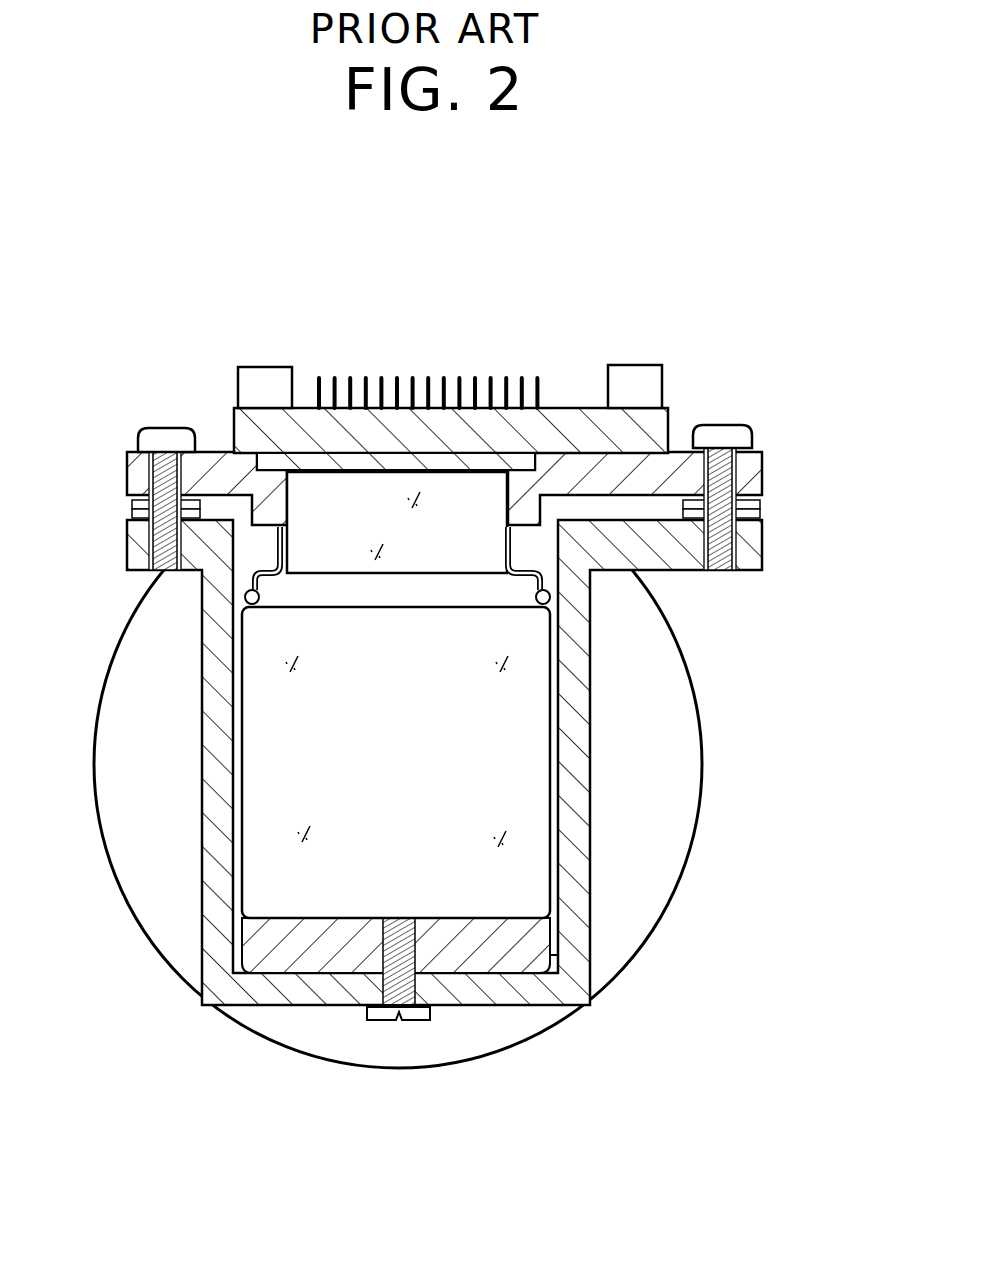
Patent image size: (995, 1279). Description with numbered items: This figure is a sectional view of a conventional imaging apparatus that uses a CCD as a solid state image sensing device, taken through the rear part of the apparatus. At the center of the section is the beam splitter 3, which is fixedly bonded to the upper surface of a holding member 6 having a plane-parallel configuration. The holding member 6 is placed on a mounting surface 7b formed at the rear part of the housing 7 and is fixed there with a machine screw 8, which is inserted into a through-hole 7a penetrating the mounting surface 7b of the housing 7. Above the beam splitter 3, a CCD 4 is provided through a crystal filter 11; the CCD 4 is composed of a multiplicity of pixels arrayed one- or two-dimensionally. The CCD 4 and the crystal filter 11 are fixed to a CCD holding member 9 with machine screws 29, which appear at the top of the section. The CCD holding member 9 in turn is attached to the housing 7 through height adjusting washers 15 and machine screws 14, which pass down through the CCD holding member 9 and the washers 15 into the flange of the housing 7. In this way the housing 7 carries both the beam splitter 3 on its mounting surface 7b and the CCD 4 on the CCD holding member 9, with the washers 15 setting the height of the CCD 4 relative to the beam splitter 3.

The beam splitter 3 is at (530, 712).
The CCD 4 is at (572, 408).
The holding member 6 is at (293, 962).
The housing 7 is at (680, 780).
The through-hole 7a is at (397, 1027).
The mounting surface 7b is at (530, 948).
The machine screw 8 is at (433, 1020).
The CCD holding member 9 is at (762, 460).
The crystal filter 11 is at (240, 597).
The machine screw 14 is at (172, 427).
The height adjusting washer 15 is at (130, 502).
The machine screw 29 is at (263, 367).